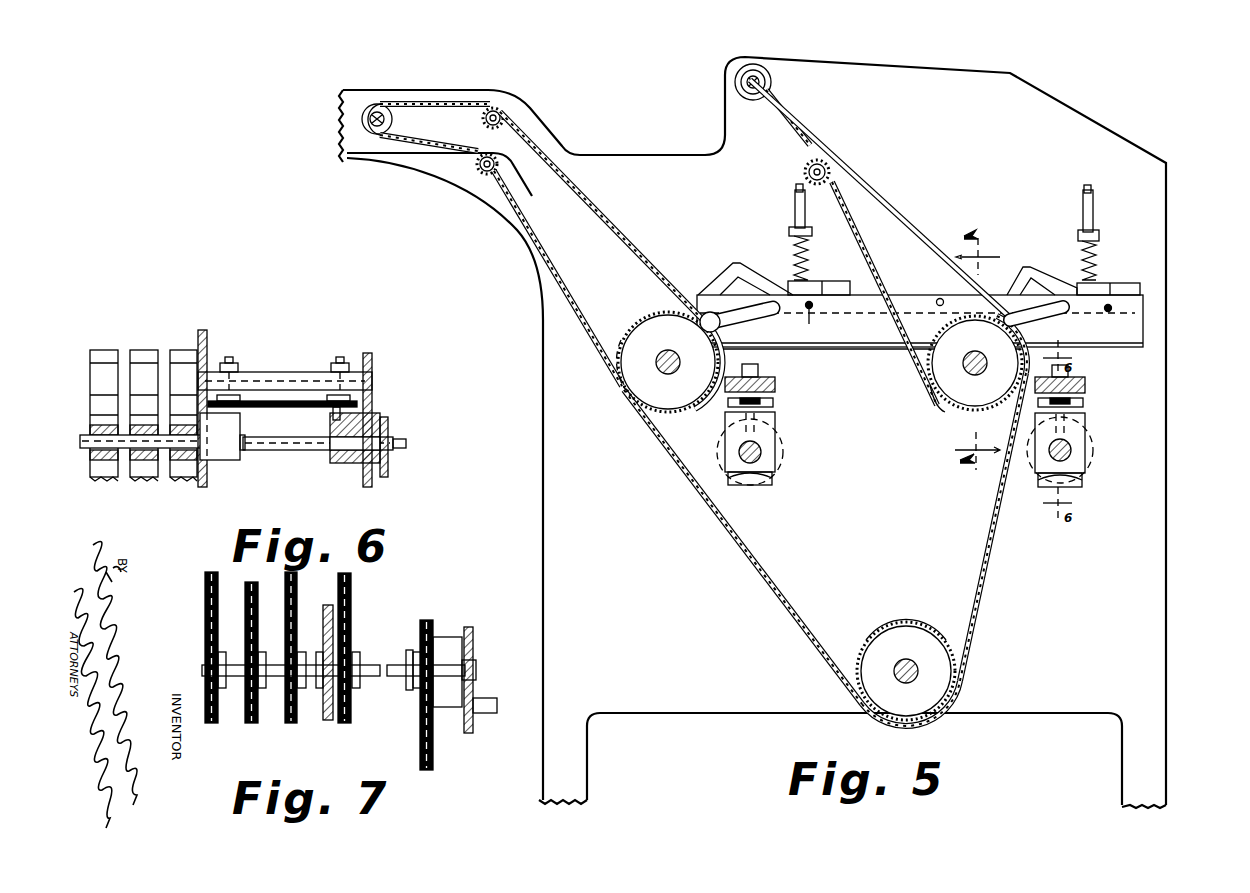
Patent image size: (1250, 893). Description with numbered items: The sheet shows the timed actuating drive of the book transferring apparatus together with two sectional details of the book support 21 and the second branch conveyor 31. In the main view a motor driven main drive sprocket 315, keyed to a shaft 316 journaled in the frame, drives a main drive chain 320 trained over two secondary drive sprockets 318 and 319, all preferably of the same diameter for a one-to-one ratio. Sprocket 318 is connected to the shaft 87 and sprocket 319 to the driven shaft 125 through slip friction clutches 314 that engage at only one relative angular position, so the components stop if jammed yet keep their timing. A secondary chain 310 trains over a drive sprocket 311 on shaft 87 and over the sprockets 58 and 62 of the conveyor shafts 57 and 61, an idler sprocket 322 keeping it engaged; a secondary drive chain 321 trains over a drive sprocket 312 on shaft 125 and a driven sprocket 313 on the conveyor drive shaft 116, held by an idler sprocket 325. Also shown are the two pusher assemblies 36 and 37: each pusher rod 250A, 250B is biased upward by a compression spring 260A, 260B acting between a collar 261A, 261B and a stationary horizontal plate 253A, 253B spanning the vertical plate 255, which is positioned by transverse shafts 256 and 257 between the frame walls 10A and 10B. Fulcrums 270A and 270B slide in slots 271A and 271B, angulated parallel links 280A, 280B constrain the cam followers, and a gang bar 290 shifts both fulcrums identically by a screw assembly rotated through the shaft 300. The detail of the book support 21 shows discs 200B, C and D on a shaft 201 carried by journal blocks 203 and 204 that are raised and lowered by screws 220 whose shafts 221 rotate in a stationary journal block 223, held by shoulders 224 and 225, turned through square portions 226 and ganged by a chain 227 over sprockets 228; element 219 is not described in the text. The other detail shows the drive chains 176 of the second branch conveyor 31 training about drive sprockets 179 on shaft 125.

In FIG. 6, the frame wall 10A is at (203, 330).
In FIG. 7, the frame wall 10A is at (327, 722).
In FIG. 5, the frame wall 10B is at (1010, 75).
In FIG. 6, the frame wall 10B is at (370, 353).
In FIG. 7, the frame wall 10B is at (470, 733).
In FIG. 6, the book support 21 is at (127, 421).
In FIG. 7, the second branch conveyor 31 is at (193, 572).
In FIG. 5, the pusher assembly 36 is at (780, 192).
In FIG. 5, the pusher assembly 37 is at (1064, 193).
In FIG. 5, the shaft 57 is at (377, 134).
In FIG. 5, the sprocket 58 is at (392, 125).
In FIG. 5, the shaft 61 is at (500, 128).
In FIG. 5, the sprocket 62 is at (480, 112).
In FIG. 5, the shaft 87 is at (668, 374).
In FIG. 5, the drive shaft 116 is at (756, 64).
In FIG. 5, the driven shaft 125 is at (972, 375).
In FIG. 7, the driven shaft 125 is at (368, 665).
In FIG. 7, the drive chains 176 is at (280, 582).
In FIG. 7, the drive sprockets 179 is at (300, 700).
In FIG. 6, the disc 200B is at (104, 480).
In FIG. 6, the disc C is at (146, 480).
In FIG. 6, the disc D is at (186, 480).
In FIG. 5, the shaft 201 is at (1078, 452).
In FIG. 6, the shaft 201 is at (86, 444).
In FIG. 6, the journal block 203 is at (224, 462).
In FIG. 6, the journal block 204 is at (345, 465).
In FIG. 6, the shaft end 219 is at (406, 440).
In FIG. 6, the screw 220 is at (330, 413).
In FIG. 6, the shaft 221 is at (285, 381).
In FIG. 6, the stationary journal block 223 is at (372, 380).
In FIG. 6, the upper shoulder 224 is at (232, 393).
In FIG. 6, the lower shoulder 225 is at (240, 362).
In FIG. 6, the square cross-section portion 226 is at (341, 356).
In FIG. 6, the chain 227 is at (360, 405).
In FIG. 6, the sprocket 228 is at (222, 436).
In FIG. 5, the pusher rod 250A is at (1094, 205).
In FIG. 5, the pusher rod 250B is at (790, 215).
In FIG. 5, the stationary horizontal plate 253A is at (1140, 287).
In FIG. 5, the stationary horizontal plate 253B is at (847, 272).
In FIG. 5, the vertical plate 255 is at (1143, 333).
In FIG. 5, the transverse shaft 256 is at (1106, 311).
In FIG. 5, the transverse shaft 257 is at (824, 321).
In FIG. 5, the compression spring 260A is at (1097, 250).
In FIG. 5, the compression spring 260B is at (792, 245).
In FIG. 5, the collar 261A is at (1100, 231).
In FIG. 5, the collar 261B is at (812, 232).
In FIG. 5, the pivot 270A is at (1032, 290).
In FIG. 5, the fulcrum 270B is at (703, 297).
In FIG. 5, the slot 271A is at (1058, 308).
In FIG. 5, the slot 271B is at (785, 348).
In FIG. 5, the parallel links 280A is at (1065, 265).
In FIG. 5, the parallel links 280B is at (728, 265).
In FIG. 5, the gang bar 290 is at (890, 348).
In FIG. 5, the shaft 300 is at (937, 300).
In FIG. 5, the secondary chain 310 is at (578, 315).
In FIG. 5, the drive sprocket 311 is at (640, 400).
In FIG. 5, the drive sprocket 312 is at (960, 400).
In FIG. 7, the drive sprocket 312 is at (355, 695).
In FIG. 5, the driven sprocket 313 is at (782, 88).
In FIG. 7, the slip friction clutch 314 is at (450, 637).
In FIG. 5, the main drive sprocket 315 is at (912, 622).
In FIG. 5, the shaft 316 is at (906, 659).
In FIG. 5, the secondary drive sprocket 318 is at (620, 377).
In FIG. 5, the secondary drive sprocket 319 is at (1002, 326).
In FIG. 7, the secondary drive sprocket 319 is at (412, 690).
In FIG. 5, the main drive chain 320 is at (982, 572).
In FIG. 7, the main drive chain 320 is at (432, 770).
In FIG. 5, the secondary drive chain 321 is at (902, 208).
In FIG. 5, the idler sprocket 322 is at (484, 178).
In FIG. 5, the idler sprocket 325 is at (806, 168).